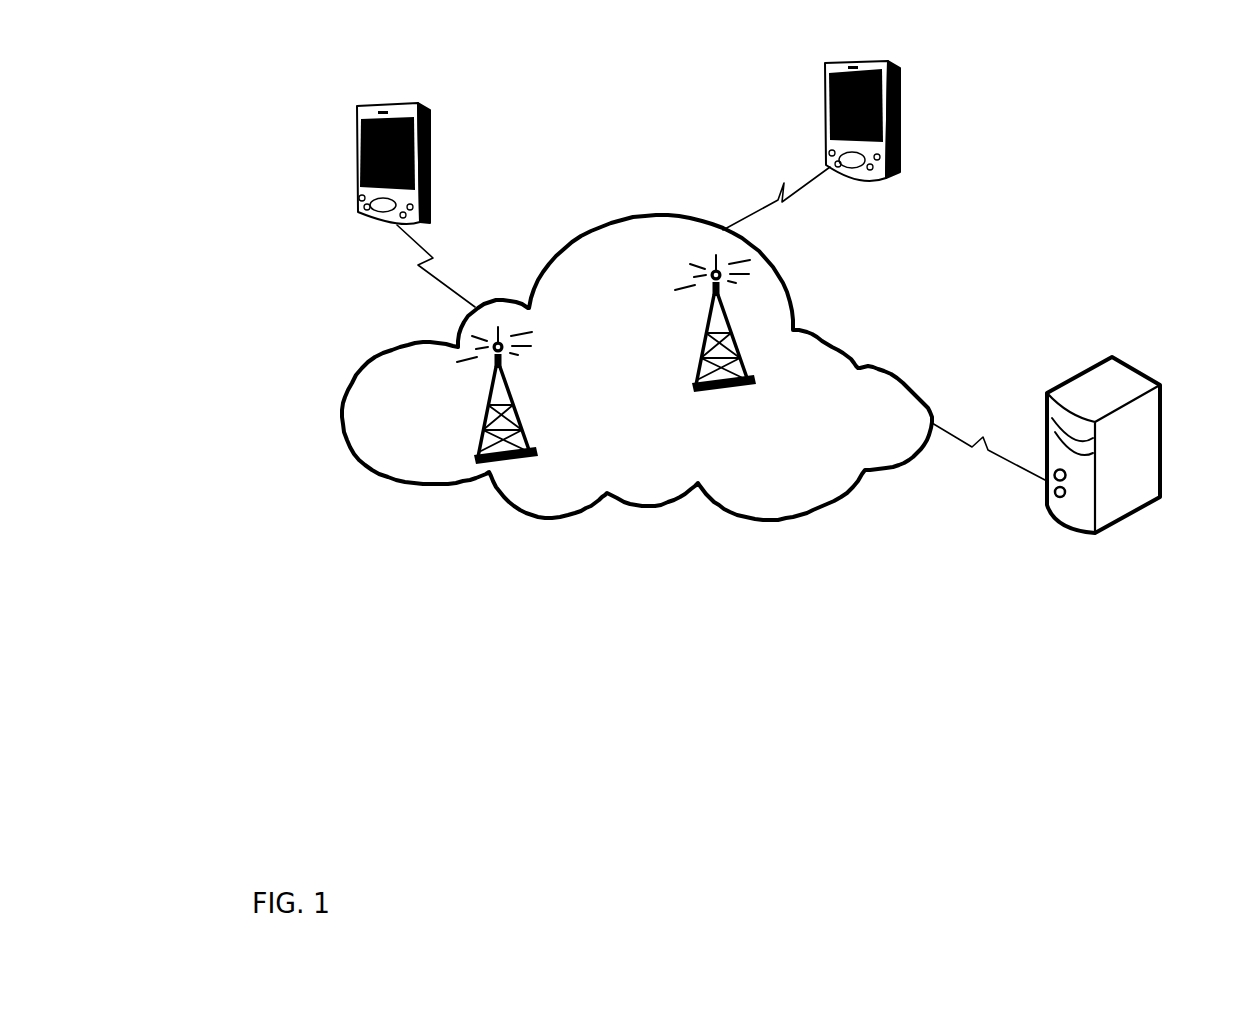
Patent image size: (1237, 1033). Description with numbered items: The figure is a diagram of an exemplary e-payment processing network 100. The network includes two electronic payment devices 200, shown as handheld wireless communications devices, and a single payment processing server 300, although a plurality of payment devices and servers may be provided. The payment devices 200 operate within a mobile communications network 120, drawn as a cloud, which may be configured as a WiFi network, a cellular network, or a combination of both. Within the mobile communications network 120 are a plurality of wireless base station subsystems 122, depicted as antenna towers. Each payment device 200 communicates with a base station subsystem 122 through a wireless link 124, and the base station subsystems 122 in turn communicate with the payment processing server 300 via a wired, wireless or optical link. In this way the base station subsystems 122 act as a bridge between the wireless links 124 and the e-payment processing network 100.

The e-payment processing network 100 is at (717, 818).
The mobile communications network 120 is at (810, 518).
The wireless base station subsystem 122 is at (507, 382).
The wireless link 124 is at (449, 289).
The electronic payment device 200 is at (428, 140).
The payment processing server 300 is at (1135, 382).